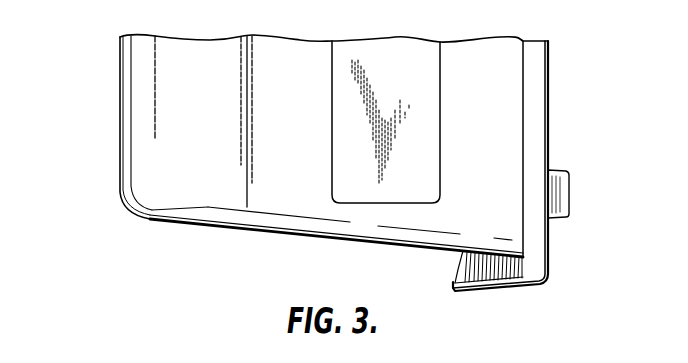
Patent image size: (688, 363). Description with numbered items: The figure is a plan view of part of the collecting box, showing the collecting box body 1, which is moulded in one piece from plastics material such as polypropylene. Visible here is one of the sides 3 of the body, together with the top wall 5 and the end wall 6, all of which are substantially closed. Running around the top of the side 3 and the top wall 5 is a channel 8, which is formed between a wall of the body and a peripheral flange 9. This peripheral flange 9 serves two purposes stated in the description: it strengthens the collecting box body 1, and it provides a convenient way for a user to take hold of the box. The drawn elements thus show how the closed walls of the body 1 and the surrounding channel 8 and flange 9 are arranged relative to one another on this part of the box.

The collecting box body 1 is at (140, 235).
The side 3 is at (322, 241).
The top wall 5 is at (490, 103).
The end wall 6 is at (138, 93).
The channel 8 is at (470, 270).
The peripheral flange 9 is at (535, 54).